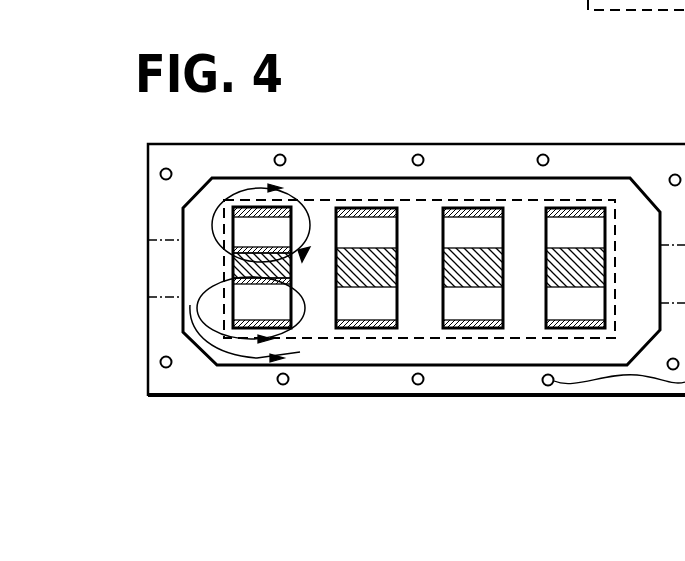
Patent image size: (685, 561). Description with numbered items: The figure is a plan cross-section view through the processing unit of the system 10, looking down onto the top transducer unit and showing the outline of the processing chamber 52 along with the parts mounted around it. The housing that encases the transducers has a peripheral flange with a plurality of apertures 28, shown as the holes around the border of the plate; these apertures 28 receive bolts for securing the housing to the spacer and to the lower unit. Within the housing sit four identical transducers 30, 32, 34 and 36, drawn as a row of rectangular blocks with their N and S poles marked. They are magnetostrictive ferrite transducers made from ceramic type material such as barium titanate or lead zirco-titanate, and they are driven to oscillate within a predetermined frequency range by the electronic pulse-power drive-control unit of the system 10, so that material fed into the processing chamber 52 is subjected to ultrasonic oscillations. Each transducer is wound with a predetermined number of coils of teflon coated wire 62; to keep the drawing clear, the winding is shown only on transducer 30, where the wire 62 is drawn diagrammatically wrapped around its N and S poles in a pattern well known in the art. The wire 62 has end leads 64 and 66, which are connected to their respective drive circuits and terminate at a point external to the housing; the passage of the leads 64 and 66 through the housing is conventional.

The system 10 is at (560, 0).
The apertures 28 is at (675, 174).
The transducer 30 is at (291, 296).
The transducer 32 is at (397, 306).
The transducer 34 is at (504, 308).
The transducer 36 is at (606, 308).
The processing chamber 52 is at (432, 250).
The wire 62 is at (318, 203).
The end lead 64 is at (307, 190).
The end lead 66 is at (257, 358).